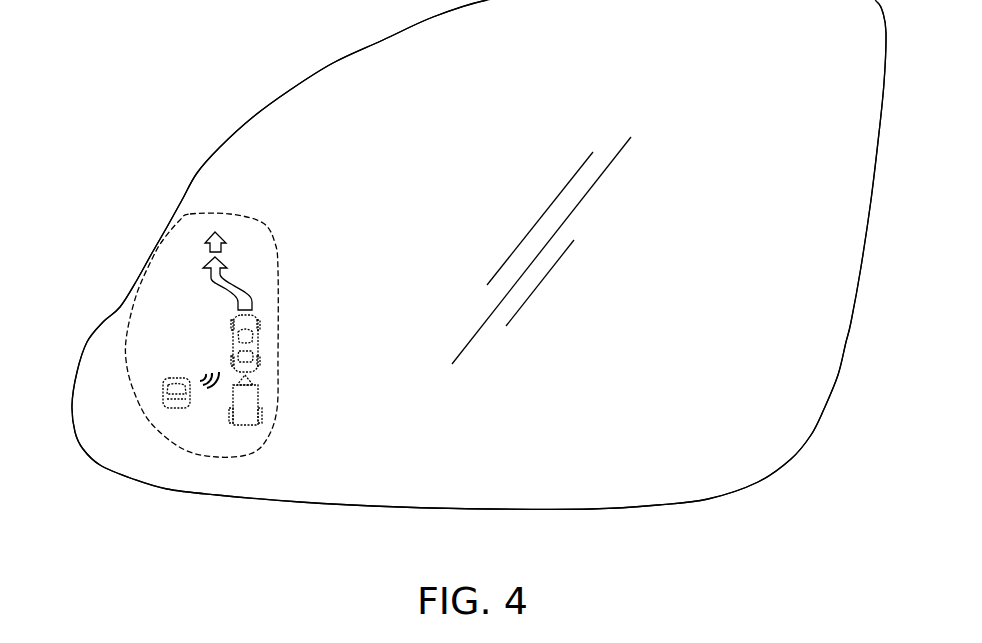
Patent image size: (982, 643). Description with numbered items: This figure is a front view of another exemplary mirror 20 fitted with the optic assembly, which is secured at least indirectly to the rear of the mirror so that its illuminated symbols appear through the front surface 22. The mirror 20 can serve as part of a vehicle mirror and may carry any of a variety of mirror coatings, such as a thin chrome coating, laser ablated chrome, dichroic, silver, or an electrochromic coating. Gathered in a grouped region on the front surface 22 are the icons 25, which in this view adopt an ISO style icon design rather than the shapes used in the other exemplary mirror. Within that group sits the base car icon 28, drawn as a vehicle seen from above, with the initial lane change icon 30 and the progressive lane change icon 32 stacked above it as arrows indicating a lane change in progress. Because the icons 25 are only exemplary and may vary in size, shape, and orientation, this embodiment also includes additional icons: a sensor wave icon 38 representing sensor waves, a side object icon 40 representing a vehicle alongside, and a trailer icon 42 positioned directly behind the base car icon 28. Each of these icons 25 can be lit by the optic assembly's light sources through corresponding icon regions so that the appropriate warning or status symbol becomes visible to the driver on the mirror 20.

The mirror 20 is at (115, 514).
The front surface 22 is at (458, 485).
The icons 25 is at (263, 230).
The base car icon 28 is at (248, 344).
The initial lane change icon 30 is at (210, 282).
The progressive lane change icon 32 is at (205, 240).
The sensor wave icon 38 is at (200, 372).
The side object icon 40 is at (163, 398).
The trailer icon 42 is at (250, 407).